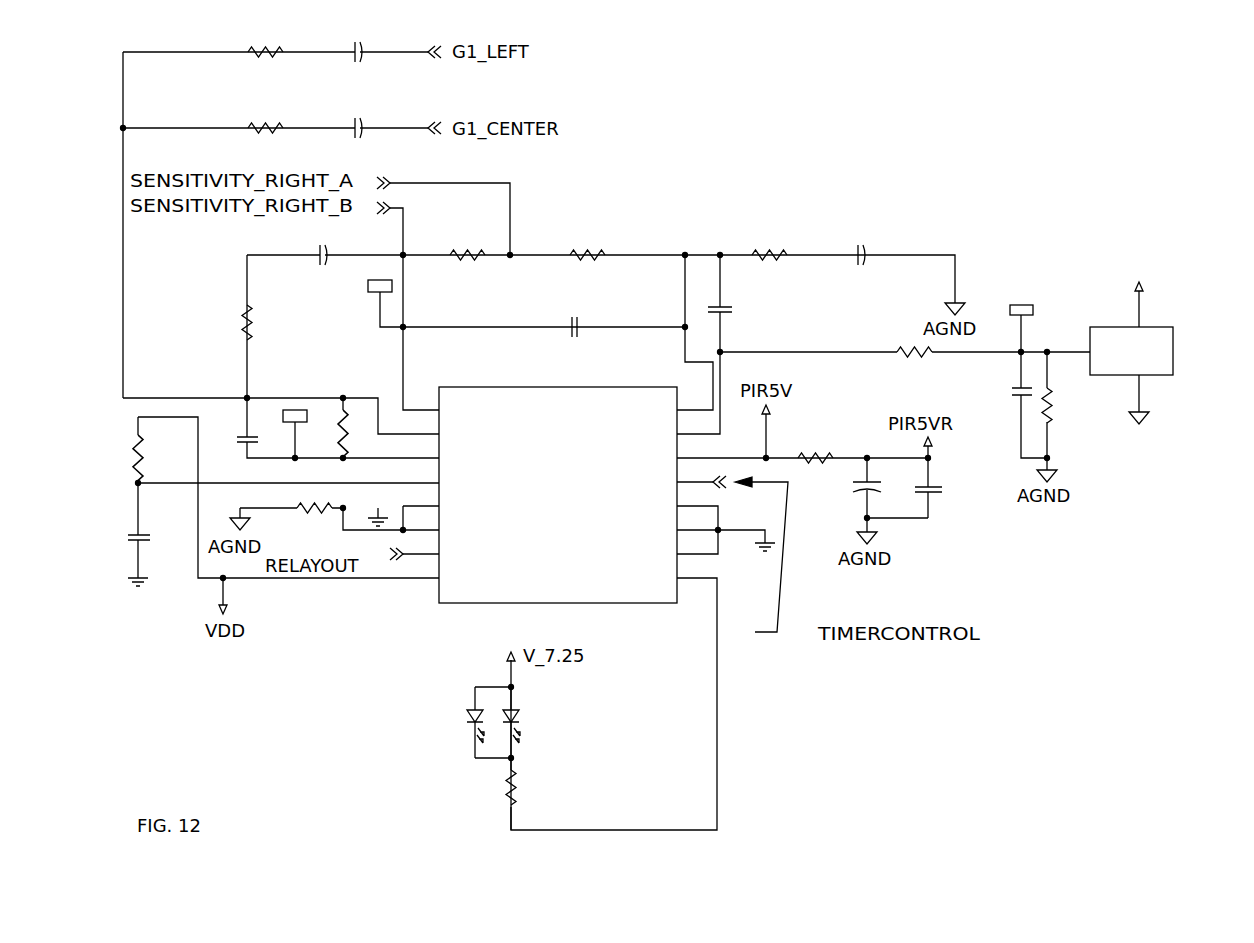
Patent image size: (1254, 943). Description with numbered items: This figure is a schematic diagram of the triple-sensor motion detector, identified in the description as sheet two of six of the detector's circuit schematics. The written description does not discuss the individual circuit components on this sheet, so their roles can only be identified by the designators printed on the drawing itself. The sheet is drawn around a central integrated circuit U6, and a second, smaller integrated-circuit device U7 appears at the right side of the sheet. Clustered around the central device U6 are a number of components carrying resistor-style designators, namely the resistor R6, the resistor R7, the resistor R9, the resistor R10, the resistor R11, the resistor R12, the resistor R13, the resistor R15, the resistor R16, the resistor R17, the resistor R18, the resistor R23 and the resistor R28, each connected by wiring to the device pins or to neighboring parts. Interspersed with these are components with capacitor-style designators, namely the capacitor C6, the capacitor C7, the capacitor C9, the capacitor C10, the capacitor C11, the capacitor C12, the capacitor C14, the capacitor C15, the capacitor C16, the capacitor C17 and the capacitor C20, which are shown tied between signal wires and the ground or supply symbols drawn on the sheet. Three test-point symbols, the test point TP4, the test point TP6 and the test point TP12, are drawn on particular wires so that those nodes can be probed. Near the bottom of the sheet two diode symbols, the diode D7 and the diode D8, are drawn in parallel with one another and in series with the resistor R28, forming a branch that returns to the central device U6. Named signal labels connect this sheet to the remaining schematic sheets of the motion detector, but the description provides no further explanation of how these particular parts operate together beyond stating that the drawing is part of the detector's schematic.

The resistor 36.5K R6 is at (273, 40).
The capacitor 22UF C6 is at (384, 55).
The resistor 36.5K R7 is at (273, 116).
The capacitor 22UF C7 is at (384, 132).
The capacitor 22UF C9 is at (315, 255).
The resistor 1.05M R9 is at (479, 263).
The resistor 1.05M R10 is at (588, 244).
The resistor 36.5K R11 is at (768, 255).
The capacitor 10UF C10 is at (882, 252).
The capacitor DNP C11 is at (743, 316).
The capacitor 0.01uF C12 is at (583, 326).
The resistor 36.5K R12 is at (279, 326).
The test point TP4 is at (523, 292).
The test point TP6 is at (282, 434).
The test point TP12 is at (1022, 297).
The capacitor 0.01uF C14 is at (242, 450).
The resistor 1.40M R15 is at (342, 428).
The resistor 2.20M R16 is at (139, 451).
The capacitor 0.01uF C17 is at (142, 546).
The resistor 0 OHM R18 is at (316, 499).
The LS6501LP PIR controller IC U6 is at (564, 490).
The resistor 36.5K R17 is at (773, 448).
The capacitor 100UF C15 is at (865, 495).
The capacitor 0.1uF C16 is at (952, 488).
The resistor 0 OHM R13 is at (910, 372).
The capacitor 0.1uF C20 is at (1012, 399).
The resistor 36.5K R23 is at (1076, 403).
The MOSFET transistor U7 is at (1155, 355).
The light emitting diode D7 is at (458, 714).
The light emitting diode D8 is at (557, 714).
The resistor 4.64K R28 is at (540, 792).